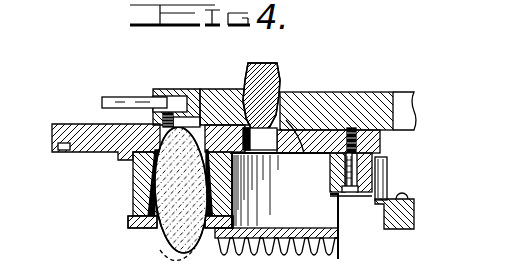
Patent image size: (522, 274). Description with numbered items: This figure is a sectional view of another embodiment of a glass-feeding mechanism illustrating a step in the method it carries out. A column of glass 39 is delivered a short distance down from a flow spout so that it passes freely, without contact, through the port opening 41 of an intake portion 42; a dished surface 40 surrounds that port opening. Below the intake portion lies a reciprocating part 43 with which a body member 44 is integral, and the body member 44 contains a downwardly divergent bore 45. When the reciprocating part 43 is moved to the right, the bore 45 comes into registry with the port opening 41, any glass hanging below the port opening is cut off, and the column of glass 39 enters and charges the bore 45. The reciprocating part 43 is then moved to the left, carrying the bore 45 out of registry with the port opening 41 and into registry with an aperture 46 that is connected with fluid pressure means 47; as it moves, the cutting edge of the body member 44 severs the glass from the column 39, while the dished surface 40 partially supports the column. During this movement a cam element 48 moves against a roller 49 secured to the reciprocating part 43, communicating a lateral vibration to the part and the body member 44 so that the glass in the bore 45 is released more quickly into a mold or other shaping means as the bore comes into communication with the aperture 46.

The column of glass 39 is at (282, 78).
The dished surface 40 is at (233, 89).
The port opening 41 is at (304, 155).
The intake portion 42 is at (324, 100).
The reciprocating part 43 is at (83, 135).
The body member 44 is at (140, 177).
The downwardly divergent bore 45 is at (148, 205).
The aperture 46 is at (200, 100).
The fluid pressure means 47 is at (122, 97).
The cam element 48 is at (376, 179).
The roller 49 is at (367, 194).